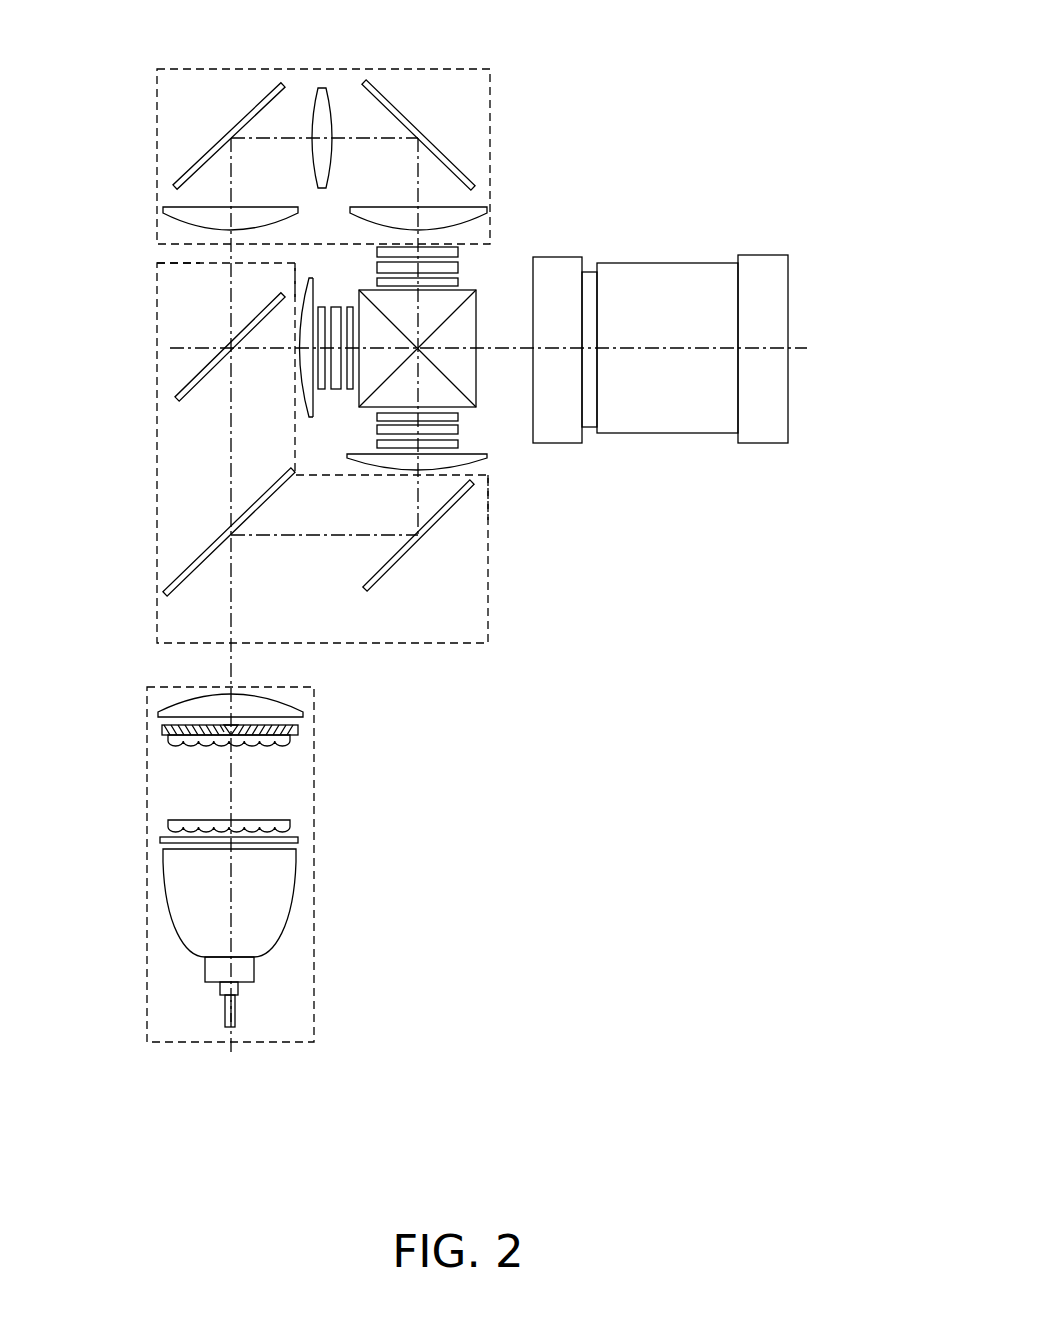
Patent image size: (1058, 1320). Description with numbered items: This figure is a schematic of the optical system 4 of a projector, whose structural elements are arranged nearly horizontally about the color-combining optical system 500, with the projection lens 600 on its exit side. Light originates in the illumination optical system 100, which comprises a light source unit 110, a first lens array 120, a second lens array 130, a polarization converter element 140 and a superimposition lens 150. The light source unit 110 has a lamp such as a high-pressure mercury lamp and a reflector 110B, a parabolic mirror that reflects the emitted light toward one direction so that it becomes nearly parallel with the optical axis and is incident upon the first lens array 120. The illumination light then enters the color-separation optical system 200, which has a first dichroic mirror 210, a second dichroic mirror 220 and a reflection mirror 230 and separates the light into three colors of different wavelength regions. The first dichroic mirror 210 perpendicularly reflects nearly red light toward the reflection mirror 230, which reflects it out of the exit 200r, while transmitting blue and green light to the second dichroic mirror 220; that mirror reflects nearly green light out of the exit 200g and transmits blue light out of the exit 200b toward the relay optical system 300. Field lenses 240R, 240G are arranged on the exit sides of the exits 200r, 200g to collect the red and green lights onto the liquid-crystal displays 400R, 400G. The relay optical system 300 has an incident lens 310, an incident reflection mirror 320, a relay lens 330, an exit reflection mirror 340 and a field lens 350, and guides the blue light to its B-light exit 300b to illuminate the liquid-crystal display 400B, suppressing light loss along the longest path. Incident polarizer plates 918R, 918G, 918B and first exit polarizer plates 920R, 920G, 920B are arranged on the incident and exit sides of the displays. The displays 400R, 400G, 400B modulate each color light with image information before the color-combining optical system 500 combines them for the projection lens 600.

The optical system 4 is at (641, 114).
The illumination optical system 100 is at (315, 1025).
The light source unit 110 is at (285, 932).
The reflector 110B is at (293, 892).
The first lens array 120 is at (290, 826).
The second lens array 130 is at (290, 740).
The polarization converter element 140 is at (298, 730).
The superimposition lens 150 is at (285, 700).
The color-separation optical system 200 is at (440, 645).
The exit 200b is at (177, 263).
The exit 200g is at (293, 287).
The exit 200r is at (452, 515).
The first dichroic mirror 210 is at (185, 578).
The second dichroic mirror 220 is at (195, 385).
The reflection mirror 230 is at (393, 565).
The field lens 240G is at (313, 296).
The field lens 240R is at (483, 459).
The relay optical system 300 is at (398, 68).
The B-light exit 300b is at (481, 243).
The incident lens 310 is at (248, 206).
The incident reflection mirror 320 is at (243, 118).
The relay lens 330 is at (328, 92).
The exit reflection mirror 340 is at (409, 121).
The field lens 350 is at (390, 206).
The liquid-crystal display 400B is at (458, 267).
The liquid-crystal display 400G is at (336, 389).
The liquid-crystal display 400R is at (458, 430).
The color-combining optical system 500 is at (478, 305).
The projection lens 600 is at (695, 434).
The incident polarizer plate 918B is at (458, 250).
The incident polarizer plate 918G is at (310, 418).
The incident polarizer plate 918R is at (458, 444).
The first exit polarizer plate 920B is at (458, 282).
The first exit polarizer plate 920G is at (350, 389).
The first exit polarizer plate 920R is at (458, 417).